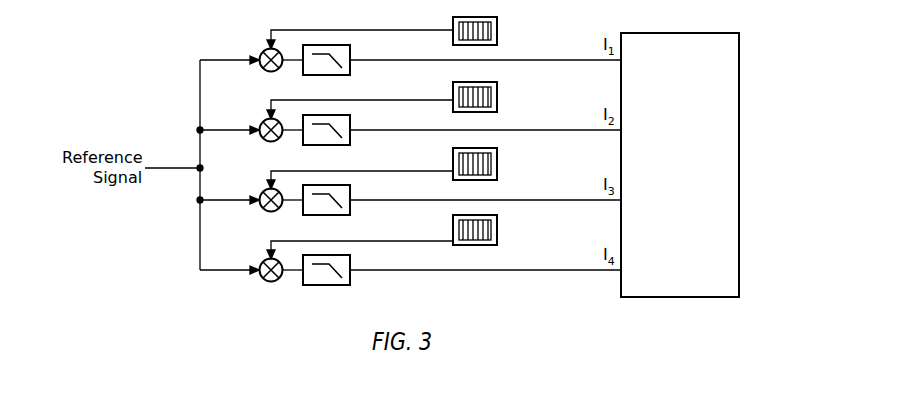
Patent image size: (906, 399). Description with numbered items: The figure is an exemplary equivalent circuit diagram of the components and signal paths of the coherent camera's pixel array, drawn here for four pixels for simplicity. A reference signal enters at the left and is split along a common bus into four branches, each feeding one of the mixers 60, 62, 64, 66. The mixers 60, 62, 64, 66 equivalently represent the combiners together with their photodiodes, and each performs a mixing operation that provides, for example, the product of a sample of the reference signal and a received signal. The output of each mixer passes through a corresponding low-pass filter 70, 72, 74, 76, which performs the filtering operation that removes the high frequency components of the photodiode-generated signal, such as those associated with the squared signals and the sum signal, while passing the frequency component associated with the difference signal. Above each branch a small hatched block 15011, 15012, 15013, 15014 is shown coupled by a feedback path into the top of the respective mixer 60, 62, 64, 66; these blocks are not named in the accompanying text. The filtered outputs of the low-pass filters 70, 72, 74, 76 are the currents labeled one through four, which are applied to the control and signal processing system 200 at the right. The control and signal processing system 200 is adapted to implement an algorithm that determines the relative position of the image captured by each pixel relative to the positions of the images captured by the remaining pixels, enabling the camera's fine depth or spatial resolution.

The mixer 60 is at (262, 52).
The mixer 62 is at (262, 122).
The mixer 64 is at (262, 192).
The mixer 66 is at (262, 262).
The low-pass filter 70 is at (350, 47).
The low-pass filter 72 is at (350, 117).
The low-pass filter 74 is at (350, 187).
The low-pass filter 76 is at (350, 257).
The detector 15011 is at (497, 32).
The detector 15012 is at (497, 100).
The detector 15013 is at (497, 171).
The detector 15014 is at (497, 241).
The control and signal processing system 200 is at (739, 167).